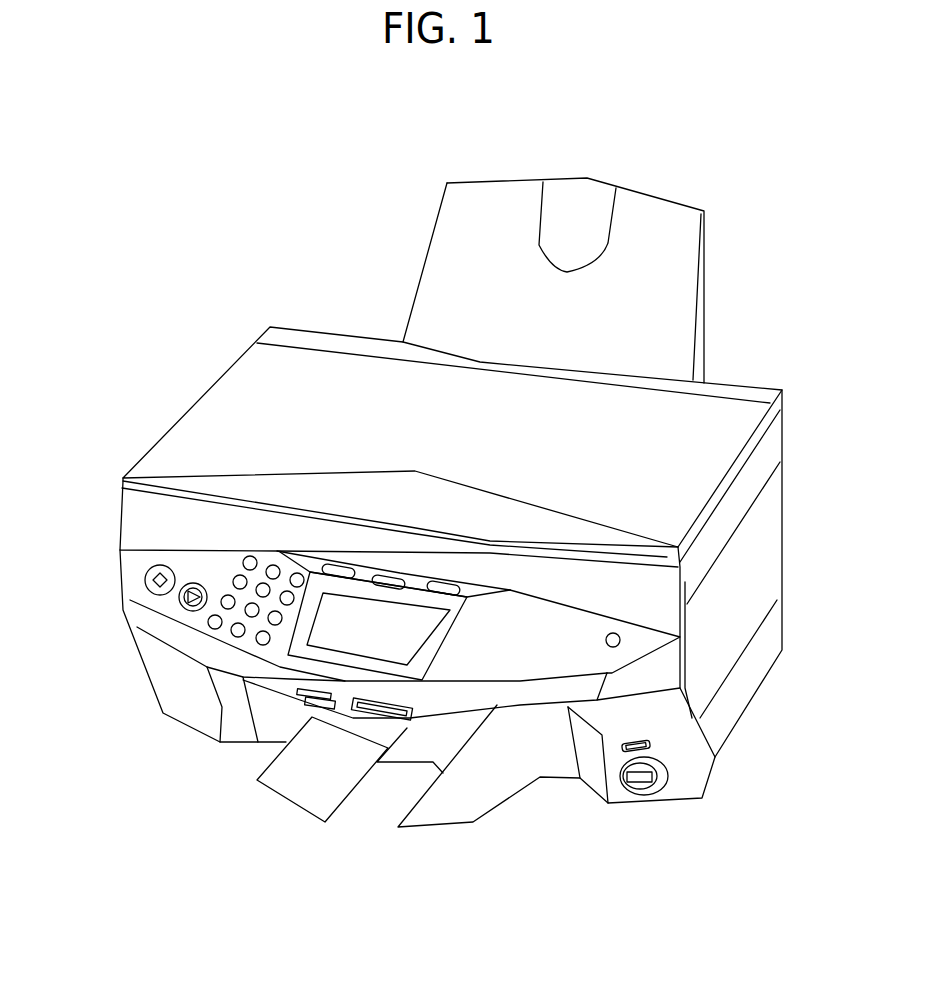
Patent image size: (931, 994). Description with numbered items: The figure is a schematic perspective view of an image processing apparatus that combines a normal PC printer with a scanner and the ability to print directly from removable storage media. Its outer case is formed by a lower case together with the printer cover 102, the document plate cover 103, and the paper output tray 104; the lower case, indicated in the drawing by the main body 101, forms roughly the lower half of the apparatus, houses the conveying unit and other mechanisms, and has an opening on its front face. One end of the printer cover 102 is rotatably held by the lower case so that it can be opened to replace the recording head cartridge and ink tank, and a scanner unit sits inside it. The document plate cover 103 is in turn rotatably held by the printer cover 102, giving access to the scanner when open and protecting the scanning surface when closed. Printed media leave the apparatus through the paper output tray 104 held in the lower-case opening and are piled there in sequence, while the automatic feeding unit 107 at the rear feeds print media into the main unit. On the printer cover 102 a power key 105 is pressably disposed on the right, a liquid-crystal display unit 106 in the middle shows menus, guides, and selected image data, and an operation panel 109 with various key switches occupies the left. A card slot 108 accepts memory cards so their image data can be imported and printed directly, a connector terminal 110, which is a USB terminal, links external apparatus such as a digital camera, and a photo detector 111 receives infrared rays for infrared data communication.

The printer main body 101 is at (176, 690).
The printer cover 102 is at (140, 524).
The document plate cover 103 is at (222, 390).
The paper output tray 104 is at (484, 798).
The power key 105 is at (620, 637).
The liquid-crystal display unit 106 is at (330, 645).
The automatic feeding unit 107 is at (690, 250).
The card slot 108 is at (377, 690).
The operation panel 109 is at (140, 596).
The connector terminal (USB terminal) 110 is at (660, 778).
The photo detector 111 is at (650, 740).